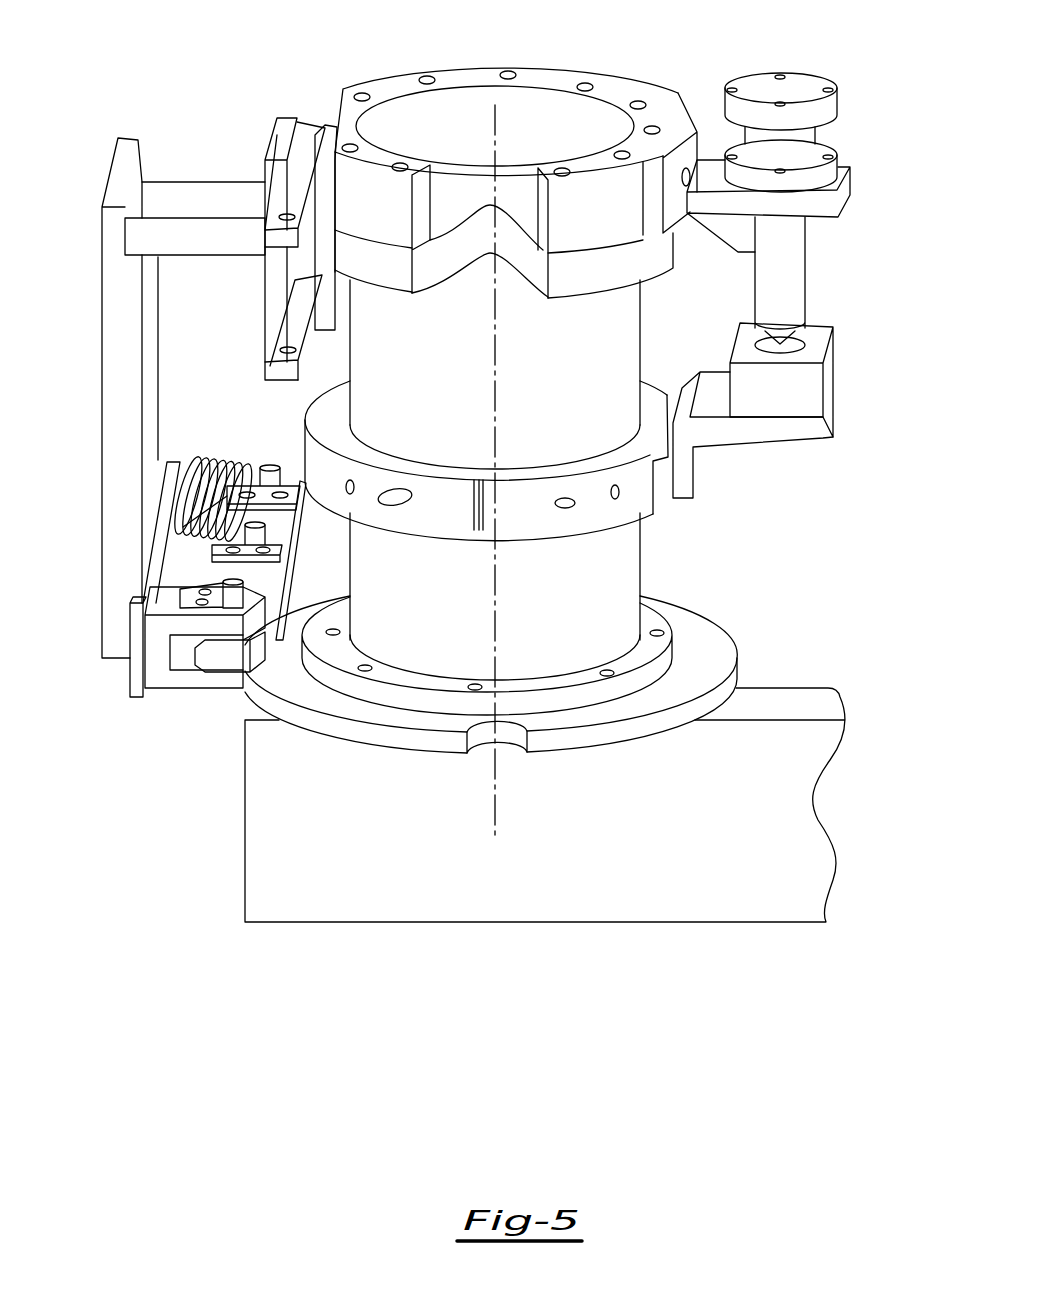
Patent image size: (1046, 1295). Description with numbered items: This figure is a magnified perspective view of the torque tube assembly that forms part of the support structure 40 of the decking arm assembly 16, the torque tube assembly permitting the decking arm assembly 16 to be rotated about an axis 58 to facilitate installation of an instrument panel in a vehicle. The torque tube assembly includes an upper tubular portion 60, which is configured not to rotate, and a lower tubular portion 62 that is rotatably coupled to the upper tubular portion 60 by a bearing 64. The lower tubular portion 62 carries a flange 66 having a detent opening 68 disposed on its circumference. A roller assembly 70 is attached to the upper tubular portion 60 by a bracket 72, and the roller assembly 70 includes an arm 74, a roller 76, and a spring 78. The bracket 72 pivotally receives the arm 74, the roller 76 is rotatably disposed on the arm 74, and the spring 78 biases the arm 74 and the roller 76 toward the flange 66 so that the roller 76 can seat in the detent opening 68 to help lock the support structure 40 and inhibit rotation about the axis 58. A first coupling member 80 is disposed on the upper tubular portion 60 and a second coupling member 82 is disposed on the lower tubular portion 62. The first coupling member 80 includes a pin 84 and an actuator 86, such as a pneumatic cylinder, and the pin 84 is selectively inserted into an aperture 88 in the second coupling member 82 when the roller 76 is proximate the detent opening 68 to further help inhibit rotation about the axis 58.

The decking arm assembly 16 is at (818, 221).
The support structure 40 is at (200, 112).
The axis 58 is at (493, 141).
The upper tubular portion 60 is at (340, 124).
The lower tubular portion 62 is at (652, 550).
The bearing 64 is at (388, 300).
The flange 66 is at (715, 648).
The detent opening 68 is at (470, 740).
The roller assembly 70 is at (188, 455).
The bracket 72 is at (102, 340).
The arm 74 is at (218, 573).
The roller 76 is at (283, 647).
The spring 78 is at (232, 458).
The first coupling member 80 is at (878, 181).
The second coupling member 82 is at (868, 438).
The pin 84 is at (803, 262).
The actuator 86 is at (808, 85).
The aperture 88 is at (805, 338).